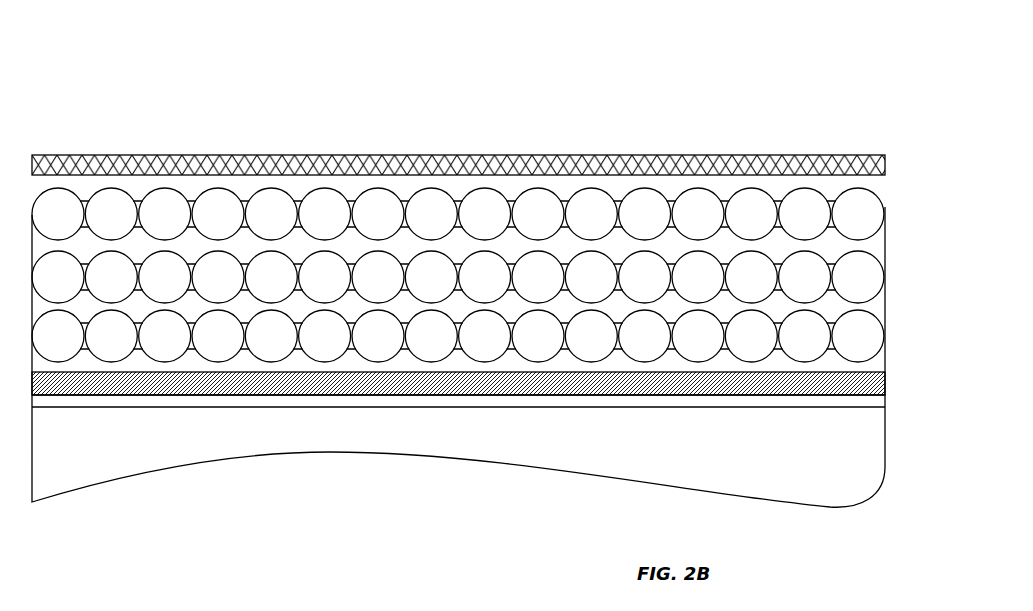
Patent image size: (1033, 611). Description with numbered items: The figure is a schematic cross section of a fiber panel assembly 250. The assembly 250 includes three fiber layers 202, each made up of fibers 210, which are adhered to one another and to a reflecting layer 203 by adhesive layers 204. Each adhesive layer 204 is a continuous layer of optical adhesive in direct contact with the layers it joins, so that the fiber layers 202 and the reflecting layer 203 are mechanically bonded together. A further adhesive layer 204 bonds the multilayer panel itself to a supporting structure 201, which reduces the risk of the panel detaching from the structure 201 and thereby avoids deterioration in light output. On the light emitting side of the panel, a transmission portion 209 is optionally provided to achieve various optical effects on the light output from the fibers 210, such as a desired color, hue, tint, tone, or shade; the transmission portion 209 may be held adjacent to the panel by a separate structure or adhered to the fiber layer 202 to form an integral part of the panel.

The fiber panel assembly 250 is at (134, 72).
The supporting structure 201 is at (458, 357).
The optical fiber layer 202 is at (884, 186).
The reflecting layer 203 is at (458, 383).
The adhesive layer 204 is at (877, 243).
The transmission portion 209 is at (482, 153).
The fibers 210 is at (218, 195).